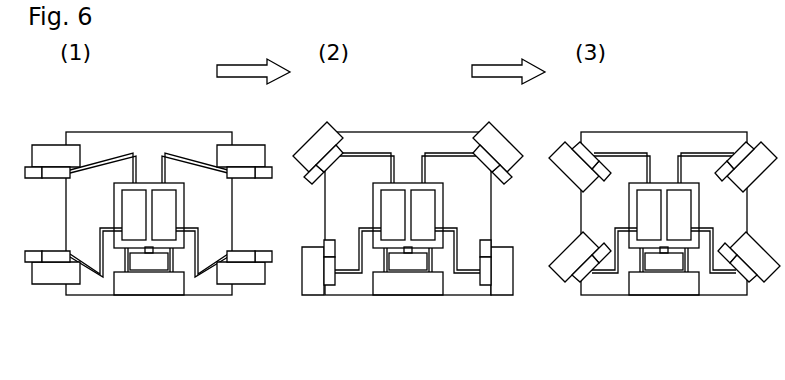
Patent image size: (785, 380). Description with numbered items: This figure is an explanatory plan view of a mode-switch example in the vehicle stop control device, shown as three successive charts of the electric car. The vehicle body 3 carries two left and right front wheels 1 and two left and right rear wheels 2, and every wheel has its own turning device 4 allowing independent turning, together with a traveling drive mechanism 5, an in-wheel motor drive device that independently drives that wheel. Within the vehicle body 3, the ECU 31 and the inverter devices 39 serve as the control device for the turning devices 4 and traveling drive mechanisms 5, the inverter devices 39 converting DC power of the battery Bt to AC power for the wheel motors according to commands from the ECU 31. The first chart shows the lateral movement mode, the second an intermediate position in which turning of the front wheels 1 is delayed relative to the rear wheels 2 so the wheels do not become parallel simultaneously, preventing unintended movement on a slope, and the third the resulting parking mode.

The front wheel 1 is at (55, 150).
The rear wheel 2 is at (57, 284).
The vehicle body 3 is at (94, 216).
The turning device 4 is at (28, 167).
The traveling drive mechanism 5 is at (52, 178).
The ECU 31 is at (142, 262).
The inverter device 39 is at (147, 183).
The battery Bt is at (155, 284).